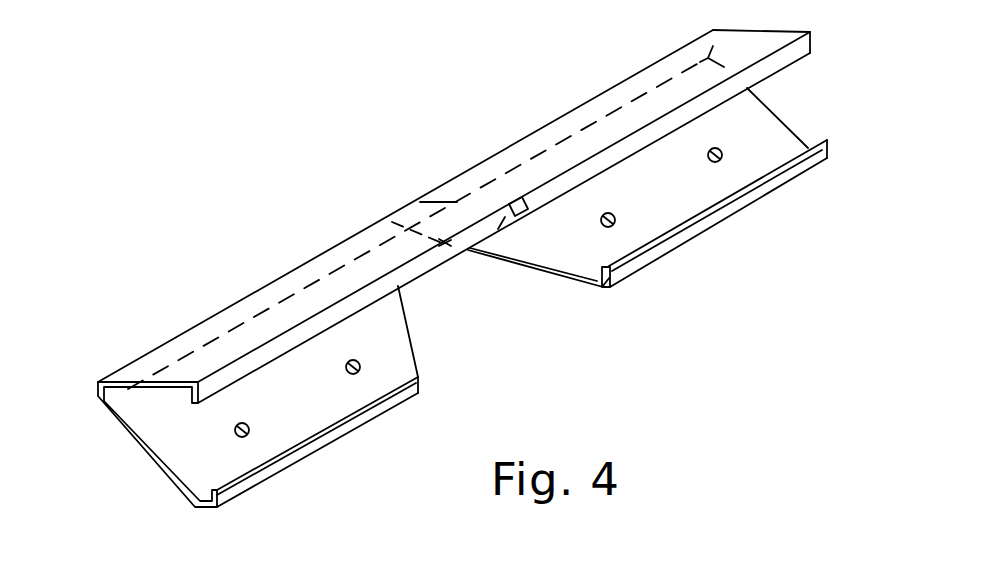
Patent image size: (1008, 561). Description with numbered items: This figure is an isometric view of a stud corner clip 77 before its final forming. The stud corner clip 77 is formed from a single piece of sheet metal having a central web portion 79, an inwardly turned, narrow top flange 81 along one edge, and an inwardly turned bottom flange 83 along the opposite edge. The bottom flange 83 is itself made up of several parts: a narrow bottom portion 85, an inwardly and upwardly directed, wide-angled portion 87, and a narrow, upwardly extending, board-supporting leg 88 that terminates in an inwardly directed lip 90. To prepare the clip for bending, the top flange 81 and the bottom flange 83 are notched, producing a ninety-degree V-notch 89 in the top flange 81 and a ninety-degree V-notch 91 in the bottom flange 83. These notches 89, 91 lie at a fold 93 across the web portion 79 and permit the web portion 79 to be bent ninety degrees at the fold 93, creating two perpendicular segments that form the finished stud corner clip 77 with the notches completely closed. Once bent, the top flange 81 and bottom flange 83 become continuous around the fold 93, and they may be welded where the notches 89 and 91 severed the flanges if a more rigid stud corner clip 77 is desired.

The stud corner clip 77 is at (310, 263).
The central web portion 79 is at (263, 305).
The top flange 81 is at (398, 286).
The bottom flange 83 is at (118, 432).
The bottom portion 85 is at (98, 394).
The wide-angled portion 87 is at (315, 395).
The board-supporting leg 88 is at (598, 290).
The V-notch 89 is at (528, 203).
The lip 90 is at (657, 250).
The V-notch 91 is at (407, 320).
The fold 93 is at (457, 202).